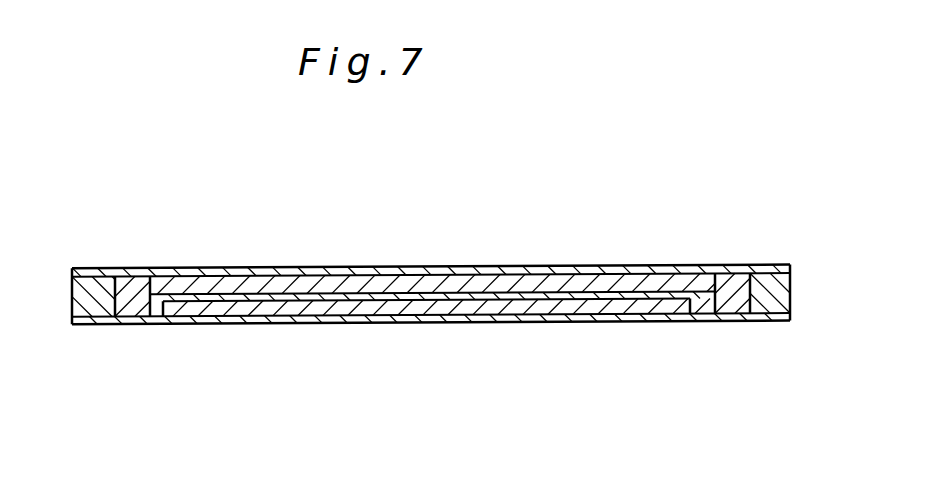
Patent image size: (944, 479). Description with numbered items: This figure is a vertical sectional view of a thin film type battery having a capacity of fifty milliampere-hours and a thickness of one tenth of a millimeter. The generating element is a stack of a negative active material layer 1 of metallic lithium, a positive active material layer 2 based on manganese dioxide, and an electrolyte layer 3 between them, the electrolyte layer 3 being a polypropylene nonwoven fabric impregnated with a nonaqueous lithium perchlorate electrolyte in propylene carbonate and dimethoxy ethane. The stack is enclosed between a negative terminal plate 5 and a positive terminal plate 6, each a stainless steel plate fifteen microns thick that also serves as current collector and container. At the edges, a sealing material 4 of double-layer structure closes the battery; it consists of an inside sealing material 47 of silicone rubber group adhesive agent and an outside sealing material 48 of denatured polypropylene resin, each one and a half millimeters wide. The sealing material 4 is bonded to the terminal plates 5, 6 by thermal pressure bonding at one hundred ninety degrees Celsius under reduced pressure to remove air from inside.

The negative active material layer 1 is at (433, 303).
The positive active material layer 2 is at (443, 272).
The electrolyte layer 3 is at (532, 302).
The sealing material 4 is at (767, 215).
The negative terminal plate 5 is at (328, 321).
The positive terminal plate 6 is at (340, 272).
The inside sealing material 47 is at (729, 277).
The outside sealing material 48 is at (790, 249).